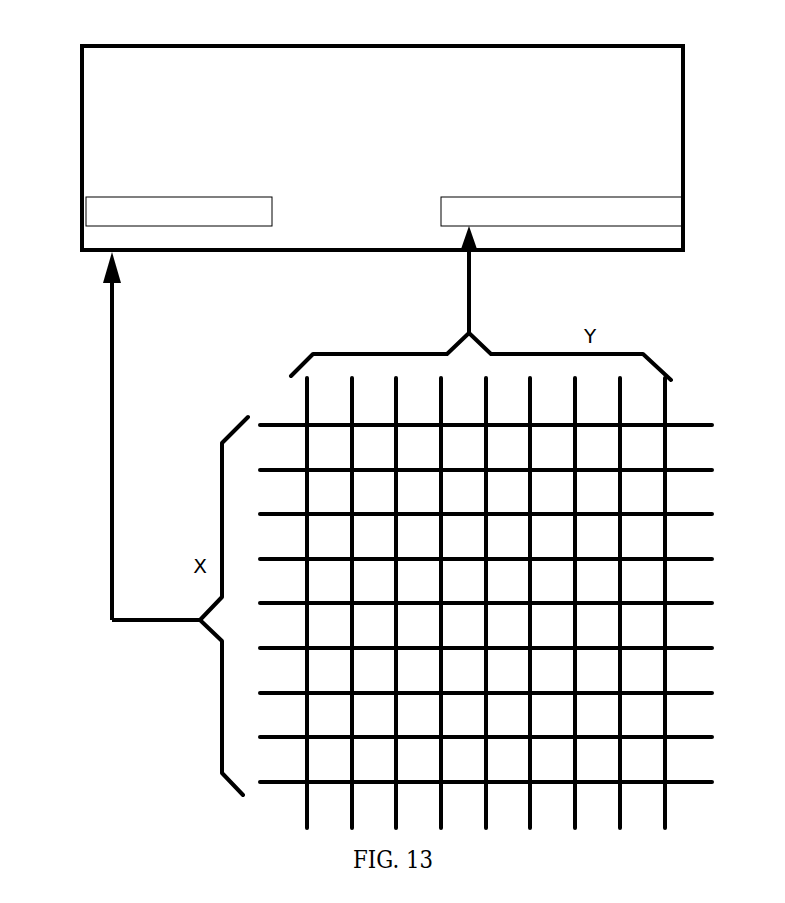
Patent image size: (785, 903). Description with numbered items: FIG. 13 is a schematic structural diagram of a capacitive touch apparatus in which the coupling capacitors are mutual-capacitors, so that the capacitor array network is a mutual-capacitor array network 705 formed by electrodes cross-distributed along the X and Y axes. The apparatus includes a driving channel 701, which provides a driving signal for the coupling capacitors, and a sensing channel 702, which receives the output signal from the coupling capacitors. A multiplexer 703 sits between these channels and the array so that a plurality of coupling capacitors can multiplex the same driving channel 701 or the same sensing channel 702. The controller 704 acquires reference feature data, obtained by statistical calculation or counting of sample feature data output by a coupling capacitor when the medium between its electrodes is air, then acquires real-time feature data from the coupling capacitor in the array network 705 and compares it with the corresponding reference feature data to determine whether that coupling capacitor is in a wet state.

The driving channel 701 is at (673, 212).
The sensing channel 702 is at (87, 211).
The multiplexer 703 is at (308, 247).
The controller 704 is at (502, 52).
The mutual-capacitor array network 705 is at (700, 390).